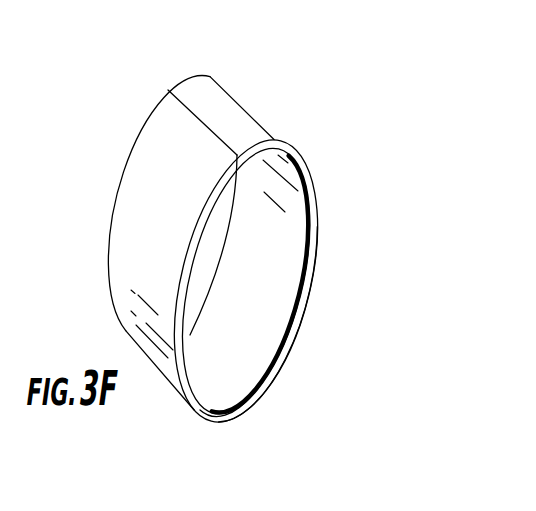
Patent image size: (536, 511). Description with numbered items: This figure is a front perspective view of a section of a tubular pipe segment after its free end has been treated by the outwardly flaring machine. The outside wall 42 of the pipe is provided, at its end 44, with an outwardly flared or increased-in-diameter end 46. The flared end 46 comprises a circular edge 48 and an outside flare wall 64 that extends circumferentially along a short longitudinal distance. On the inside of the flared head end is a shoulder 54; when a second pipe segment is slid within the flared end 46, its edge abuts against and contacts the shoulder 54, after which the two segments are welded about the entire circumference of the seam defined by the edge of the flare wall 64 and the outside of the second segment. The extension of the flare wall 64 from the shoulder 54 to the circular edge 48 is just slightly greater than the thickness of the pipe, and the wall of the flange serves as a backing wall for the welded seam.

The outside wall 42 is at (238, 100).
The end 44 is at (320, 218).
The outwardly flared end 46 is at (263, 393).
The circular edge 48 is at (292, 347).
The shoulder 54 is at (233, 410).
The flare wall 64 is at (290, 141).